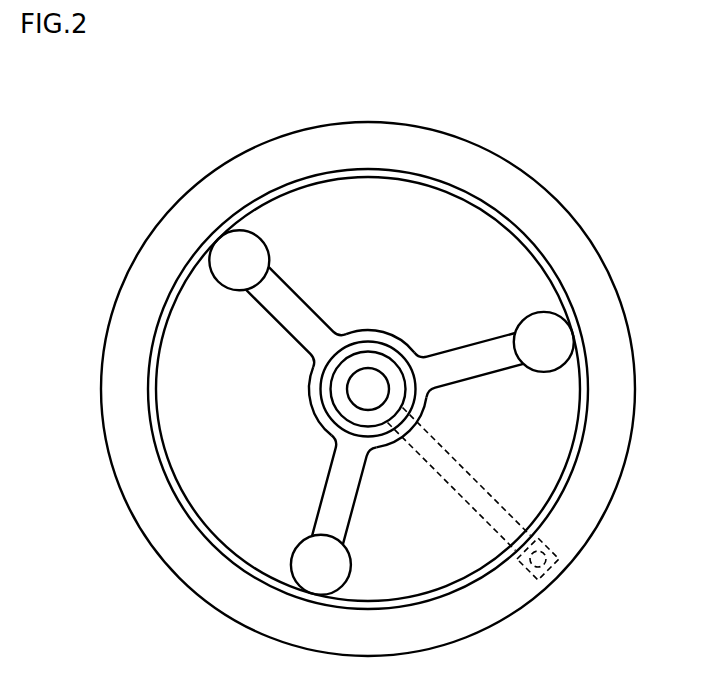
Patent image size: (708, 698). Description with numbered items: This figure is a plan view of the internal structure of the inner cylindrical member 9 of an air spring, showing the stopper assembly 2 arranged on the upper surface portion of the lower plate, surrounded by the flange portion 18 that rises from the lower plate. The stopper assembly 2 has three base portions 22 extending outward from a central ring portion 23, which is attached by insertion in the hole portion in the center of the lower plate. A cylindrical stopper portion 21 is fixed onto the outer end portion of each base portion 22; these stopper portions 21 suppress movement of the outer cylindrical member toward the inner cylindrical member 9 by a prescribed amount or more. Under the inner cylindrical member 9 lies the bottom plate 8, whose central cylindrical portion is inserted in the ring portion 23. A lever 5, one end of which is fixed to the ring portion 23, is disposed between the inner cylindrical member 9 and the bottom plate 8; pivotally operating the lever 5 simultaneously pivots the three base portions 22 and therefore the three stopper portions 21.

The stopper assembly 2 is at (391, 318).
The stopper portion 21 is at (241, 248).
The base portion 22 is at (292, 300).
The ring portion 23 is at (358, 347).
The inner cylindrical member 9 is at (612, 330).
The bottom plate 8 is at (397, 388).
The flange portion 18 is at (195, 521).
The lever 5 is at (518, 552).